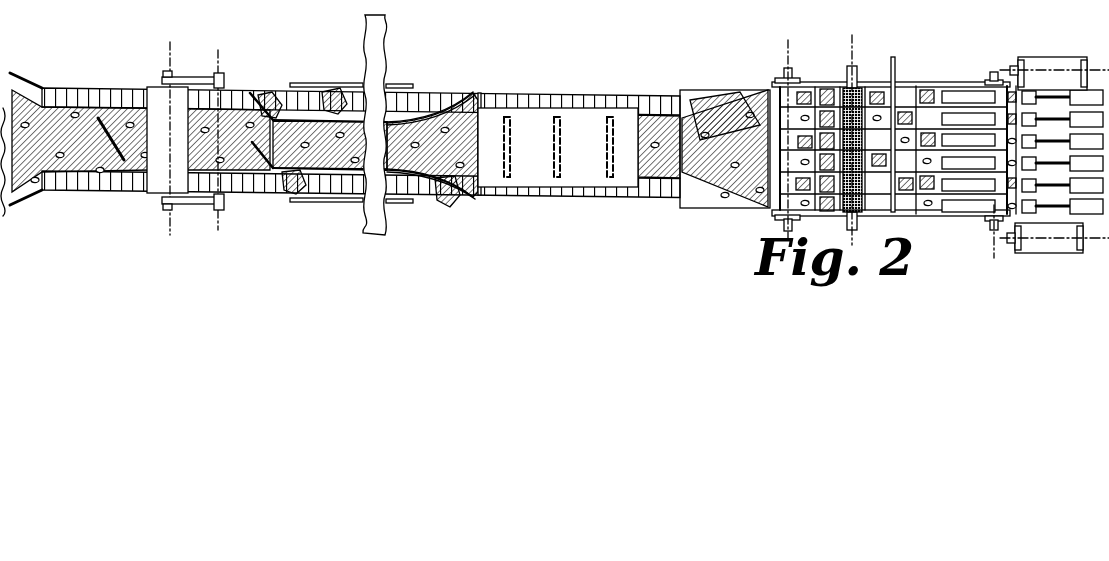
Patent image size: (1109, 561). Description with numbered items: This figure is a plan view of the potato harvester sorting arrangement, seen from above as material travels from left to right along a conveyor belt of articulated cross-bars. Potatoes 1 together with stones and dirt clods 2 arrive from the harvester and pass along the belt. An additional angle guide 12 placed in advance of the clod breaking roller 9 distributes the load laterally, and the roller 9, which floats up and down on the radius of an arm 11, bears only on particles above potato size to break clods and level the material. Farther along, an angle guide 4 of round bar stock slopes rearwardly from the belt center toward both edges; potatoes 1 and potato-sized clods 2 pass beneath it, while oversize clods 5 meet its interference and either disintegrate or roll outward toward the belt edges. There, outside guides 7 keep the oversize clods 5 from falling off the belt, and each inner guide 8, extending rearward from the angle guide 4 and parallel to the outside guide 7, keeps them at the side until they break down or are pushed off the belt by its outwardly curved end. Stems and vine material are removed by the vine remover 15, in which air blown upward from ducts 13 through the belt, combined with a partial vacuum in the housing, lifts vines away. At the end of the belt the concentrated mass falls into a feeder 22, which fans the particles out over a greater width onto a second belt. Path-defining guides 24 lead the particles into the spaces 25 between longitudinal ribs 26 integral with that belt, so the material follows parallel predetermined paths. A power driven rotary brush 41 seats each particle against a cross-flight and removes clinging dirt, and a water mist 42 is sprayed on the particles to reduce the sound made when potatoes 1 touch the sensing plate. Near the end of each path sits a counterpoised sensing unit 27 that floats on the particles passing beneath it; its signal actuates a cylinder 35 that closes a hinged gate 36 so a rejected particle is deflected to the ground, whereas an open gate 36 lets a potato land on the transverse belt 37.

The potatoes 1 is at (744, 101).
The clods 2 is at (728, 100).
The angle guide 4 is at (255, 94).
The oversize clods 5 is at (273, 90).
The outside guide 7 is at (351, 82).
The inner guide 8 is at (458, 96).
The clod breaking roller 9 is at (158, 88).
The arm 11 is at (190, 77).
The additional angle guide 12 is at (102, 116).
The ducts 13 is at (524, 139).
The vine remover 15 is at (550, 106).
The feeder 22 is at (689, 90).
The path-defining guides 24 is at (802, 86).
The spaces 25 is at (924, 82).
The longitudinal ribs 26 is at (966, 88).
The sensing unit 27 is at (975, 94).
The cylinder 35 is at (1086, 86).
The hinged gate 36 is at (1044, 72).
The transverse belt 37 is at (1046, 253).
The rotary brush 41 is at (832, 87).
The mist 42 is at (891, 92).